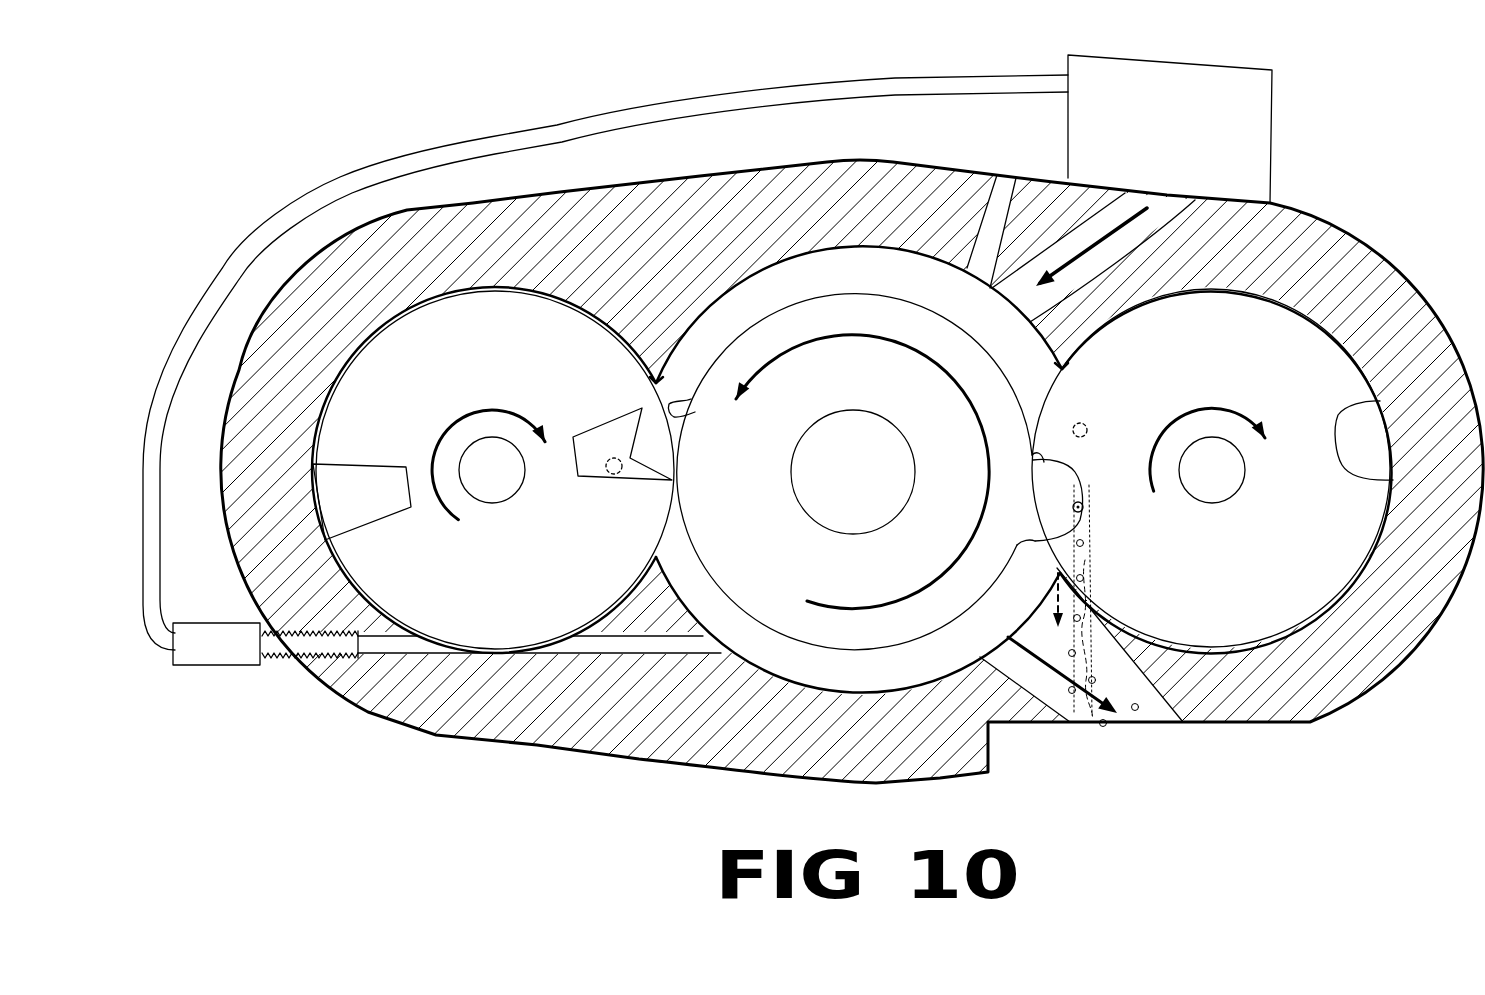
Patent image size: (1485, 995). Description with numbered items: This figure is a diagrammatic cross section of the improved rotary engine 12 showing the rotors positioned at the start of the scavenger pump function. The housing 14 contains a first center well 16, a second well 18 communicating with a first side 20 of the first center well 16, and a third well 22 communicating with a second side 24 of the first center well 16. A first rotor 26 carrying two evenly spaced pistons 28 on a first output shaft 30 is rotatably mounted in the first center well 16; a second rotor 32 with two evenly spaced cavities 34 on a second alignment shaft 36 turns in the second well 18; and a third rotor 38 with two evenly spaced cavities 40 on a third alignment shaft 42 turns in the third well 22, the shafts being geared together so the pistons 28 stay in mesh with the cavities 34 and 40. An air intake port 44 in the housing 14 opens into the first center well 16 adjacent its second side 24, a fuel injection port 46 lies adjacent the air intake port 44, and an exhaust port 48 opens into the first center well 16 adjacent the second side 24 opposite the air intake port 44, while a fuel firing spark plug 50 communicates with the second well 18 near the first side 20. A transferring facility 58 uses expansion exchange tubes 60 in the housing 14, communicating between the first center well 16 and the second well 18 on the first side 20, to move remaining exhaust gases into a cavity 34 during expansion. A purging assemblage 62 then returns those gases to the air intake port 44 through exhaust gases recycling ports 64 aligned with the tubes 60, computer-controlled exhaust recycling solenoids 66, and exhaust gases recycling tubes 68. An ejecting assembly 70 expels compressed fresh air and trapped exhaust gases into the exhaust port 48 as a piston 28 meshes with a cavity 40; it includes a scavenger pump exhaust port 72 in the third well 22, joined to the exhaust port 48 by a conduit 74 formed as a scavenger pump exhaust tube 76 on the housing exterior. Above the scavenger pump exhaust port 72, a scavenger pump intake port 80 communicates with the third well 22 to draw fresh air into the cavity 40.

The rotary engine 12 is at (1356, 181).
The housing 14 is at (1406, 271).
The first center well 16 is at (793, 259).
The second well 18 is at (313, 506).
The first side 20 is at (651, 372).
The third well 22 is at (1388, 430).
The second side 24 is at (1061, 368).
The first rotor 26 is at (874, 300).
The pistons 28 is at (676, 406).
The first output shaft 30 is at (812, 507).
The second rotor 32 is at (515, 310).
The cavities 34 is at (383, 467).
The second alignment shaft 36 is at (519, 478).
The third rotor 38 is at (1360, 563).
The cavities 40 is at (1073, 470).
The third alignment shaft 42 is at (1238, 484).
The air intake port 44 is at (1060, 242).
The fuel injection port 46 is at (972, 232).
The exhaust port 48 is at (1160, 716).
The fuel firing spark plug 50 is at (622, 480).
The transferring facility 58 is at (563, 668).
The expansion exchange tubes 60 is at (649, 647).
The purging assemblage 62 is at (498, 127).
The exhaust gases recycling ports 64 is at (378, 648).
The exhaust recycling solenoids 66 is at (204, 624).
The exhaust gases recycling tubes 68 is at (628, 124).
The ejecting assembly 70 is at (1113, 642).
The scavenger pump exhaust port 72 is at (1083, 500).
The conduit 74 is at (1097, 554).
The scavenger pump exhaust tube 76 is at (1096, 626).
The scavenger pump intake port 80 is at (1086, 428).